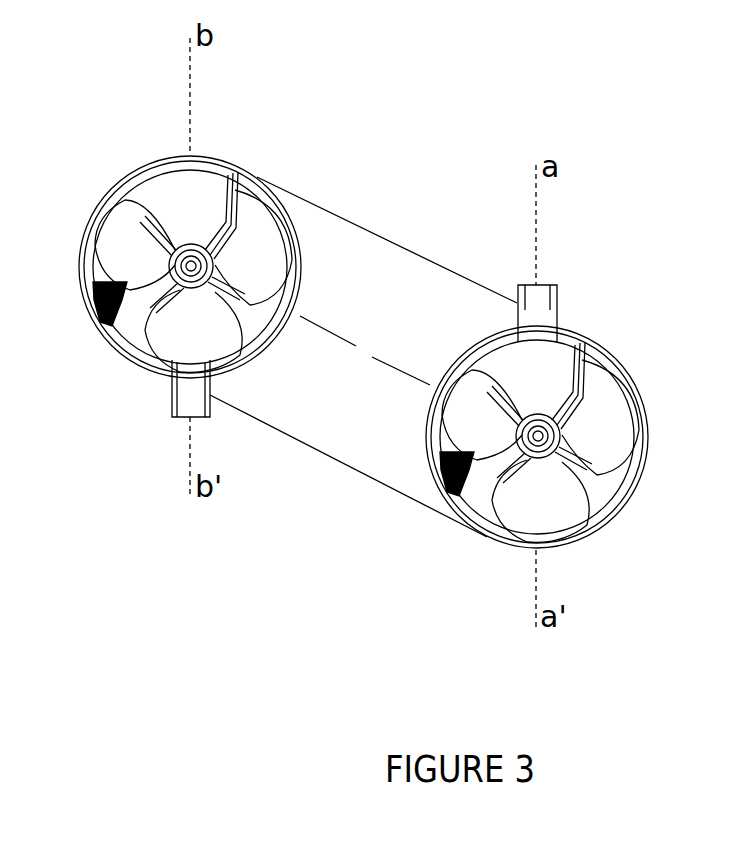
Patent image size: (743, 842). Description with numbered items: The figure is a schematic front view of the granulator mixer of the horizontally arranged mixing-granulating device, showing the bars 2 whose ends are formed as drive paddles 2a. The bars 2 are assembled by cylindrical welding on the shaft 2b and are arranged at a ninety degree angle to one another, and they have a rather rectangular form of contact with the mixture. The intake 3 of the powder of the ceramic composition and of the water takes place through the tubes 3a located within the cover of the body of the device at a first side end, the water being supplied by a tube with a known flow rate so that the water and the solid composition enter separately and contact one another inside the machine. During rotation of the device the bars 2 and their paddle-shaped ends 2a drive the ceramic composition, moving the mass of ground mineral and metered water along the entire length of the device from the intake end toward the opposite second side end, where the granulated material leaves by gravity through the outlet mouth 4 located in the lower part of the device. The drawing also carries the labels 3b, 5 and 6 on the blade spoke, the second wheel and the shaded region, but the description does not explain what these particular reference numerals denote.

The bars 2 is at (150, 240).
The paddles 2a is at (303, 199).
The shaft 2b is at (348, 426).
The intake 3 is at (558, 299).
The tubes 3a is at (552, 280).
The blade spoke 3b is at (247, 230).
The outlet mouth 4 is at (172, 396).
The second impeller wheel 5 is at (650, 437).
The shaded chamfer region 6 is at (96, 318).